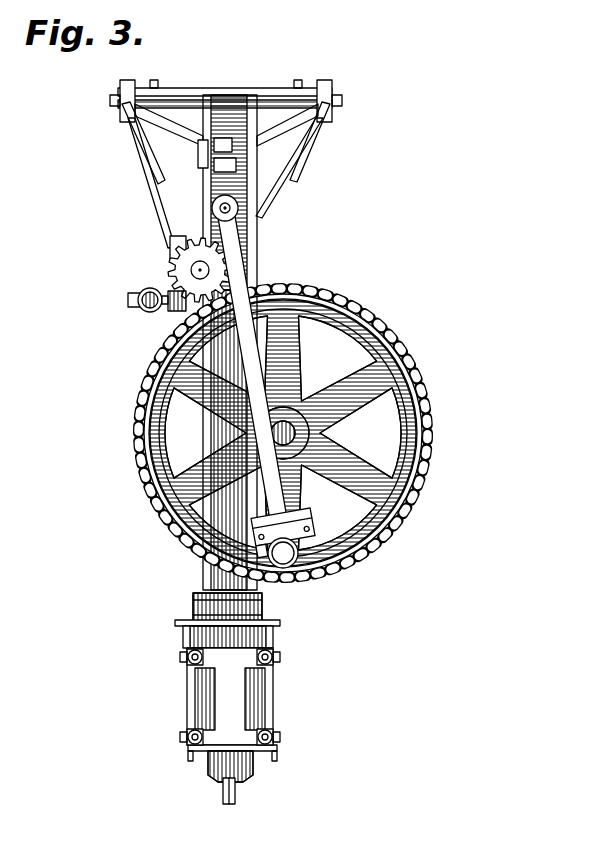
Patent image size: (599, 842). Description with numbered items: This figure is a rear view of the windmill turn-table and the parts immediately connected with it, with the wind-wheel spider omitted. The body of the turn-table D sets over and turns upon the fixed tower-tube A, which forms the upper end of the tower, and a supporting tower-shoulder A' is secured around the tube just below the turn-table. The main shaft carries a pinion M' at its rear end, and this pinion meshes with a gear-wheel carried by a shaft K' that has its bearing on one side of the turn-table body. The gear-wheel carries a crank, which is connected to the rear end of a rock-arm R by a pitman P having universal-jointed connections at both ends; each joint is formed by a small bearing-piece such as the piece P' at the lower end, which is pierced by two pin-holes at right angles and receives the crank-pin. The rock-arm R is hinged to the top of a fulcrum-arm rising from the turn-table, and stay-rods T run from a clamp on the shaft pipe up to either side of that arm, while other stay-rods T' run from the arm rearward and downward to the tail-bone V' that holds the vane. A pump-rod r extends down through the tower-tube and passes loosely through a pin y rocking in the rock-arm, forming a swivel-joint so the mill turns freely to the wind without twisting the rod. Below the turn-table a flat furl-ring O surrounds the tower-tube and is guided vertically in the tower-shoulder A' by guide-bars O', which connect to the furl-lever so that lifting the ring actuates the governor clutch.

The stay-rods T' is at (224, 143).
The stay-rods T is at (211, 183).
The rock-arm R is at (205, 148).
The pin y is at (212, 162).
The turn-table D is at (215, 432).
The pinion M' is at (179, 270).
The tail-bone V' is at (147, 307).
The shaft K' is at (283, 433).
The pitman P is at (270, 363).
The bearing-piece P' is at (294, 536).
The furl-ring O is at (214, 609).
The guide-bars O' is at (233, 697).
The tower-shoulder A' is at (230, 693).
The tower-tube A is at (251, 766).
The pump-rod r is at (236, 790).